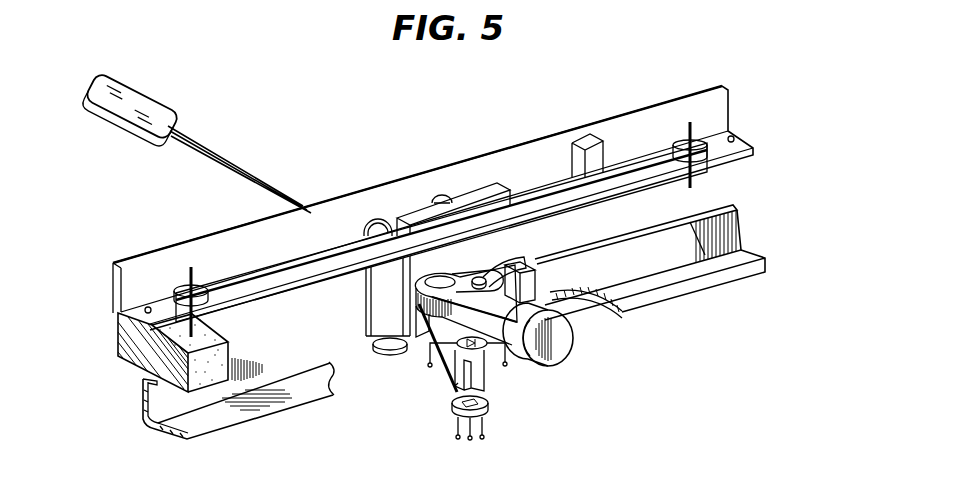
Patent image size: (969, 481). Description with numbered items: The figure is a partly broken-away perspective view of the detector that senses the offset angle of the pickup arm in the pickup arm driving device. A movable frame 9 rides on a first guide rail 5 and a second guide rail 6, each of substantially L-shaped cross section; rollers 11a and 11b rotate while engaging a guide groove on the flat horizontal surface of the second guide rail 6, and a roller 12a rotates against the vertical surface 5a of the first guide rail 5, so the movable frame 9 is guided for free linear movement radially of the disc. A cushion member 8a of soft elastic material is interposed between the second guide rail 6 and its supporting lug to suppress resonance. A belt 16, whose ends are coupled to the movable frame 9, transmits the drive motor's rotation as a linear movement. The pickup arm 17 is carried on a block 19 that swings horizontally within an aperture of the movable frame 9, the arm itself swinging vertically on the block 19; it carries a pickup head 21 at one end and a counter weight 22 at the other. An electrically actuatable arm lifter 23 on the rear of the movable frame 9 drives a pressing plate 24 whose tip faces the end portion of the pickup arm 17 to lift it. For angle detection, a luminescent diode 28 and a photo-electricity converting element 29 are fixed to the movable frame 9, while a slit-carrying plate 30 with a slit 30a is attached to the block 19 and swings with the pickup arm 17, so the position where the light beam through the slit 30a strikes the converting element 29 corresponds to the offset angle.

The first guide rail 5 is at (717, 208).
The vertical surface 5a is at (730, 232).
The second guide rail 6 is at (653, 105).
The cushion member 8a is at (132, 358).
The movable frame 9 is at (482, 200).
The roller 11a is at (375, 210).
The roller 11b is at (437, 195).
The roller 12a is at (362, 330).
The belt 16 is at (316, 268).
The pickup arm 17 is at (240, 168).
The block 19 is at (450, 274).
The pickup head 21 is at (125, 82).
The counter weight 22 is at (572, 343).
The arm lifter 23 is at (530, 292).
The pressing plate 24 is at (522, 262).
The luminescent diode 28 is at (485, 368).
The photo-electricity converting element 29 is at (490, 406).
The slit-carrying plate 30 is at (438, 373).
The slit 30a is at (447, 384).